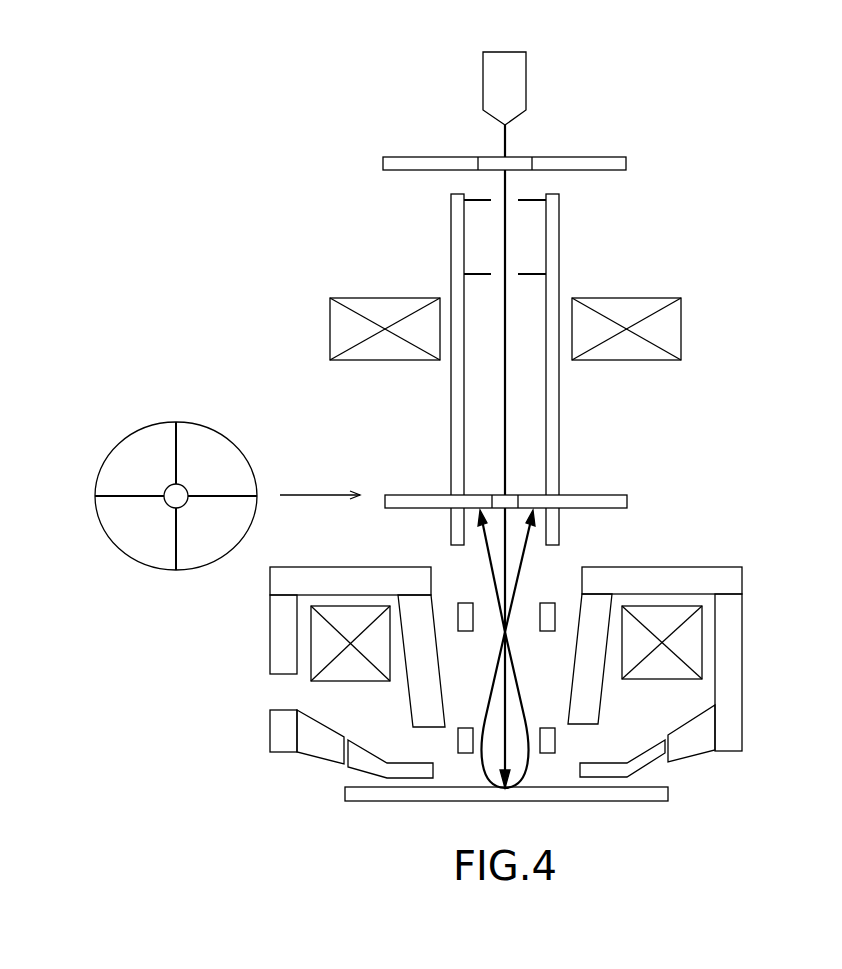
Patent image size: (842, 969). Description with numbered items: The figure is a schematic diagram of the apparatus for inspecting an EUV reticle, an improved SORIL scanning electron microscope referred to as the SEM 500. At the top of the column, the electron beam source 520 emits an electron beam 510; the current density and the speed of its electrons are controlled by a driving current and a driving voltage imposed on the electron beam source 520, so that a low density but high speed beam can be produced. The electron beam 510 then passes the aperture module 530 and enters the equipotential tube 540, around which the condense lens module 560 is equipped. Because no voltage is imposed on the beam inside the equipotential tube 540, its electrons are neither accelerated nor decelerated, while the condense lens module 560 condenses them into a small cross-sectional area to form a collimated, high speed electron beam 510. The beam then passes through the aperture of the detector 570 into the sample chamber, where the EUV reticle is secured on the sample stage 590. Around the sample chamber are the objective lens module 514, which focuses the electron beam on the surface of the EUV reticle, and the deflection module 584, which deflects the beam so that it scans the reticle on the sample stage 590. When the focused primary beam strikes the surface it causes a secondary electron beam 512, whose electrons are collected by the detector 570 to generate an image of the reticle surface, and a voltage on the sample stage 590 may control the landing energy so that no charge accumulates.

The SEM 500 is at (394, 404).
The electron beam 510 is at (502, 147).
The secondary electron beam 512 is at (532, 567).
The objective lens module 514 is at (323, 707).
The electron beam source 520 is at (520, 120).
The aperture module 530 is at (635, 162).
The equipotential tube 540 is at (572, 198).
The condense lens module 560 is at (695, 328).
The detector 570 is at (227, 480).
The deflection module 584 is at (550, 741).
The sample stage 590 is at (506, 808).